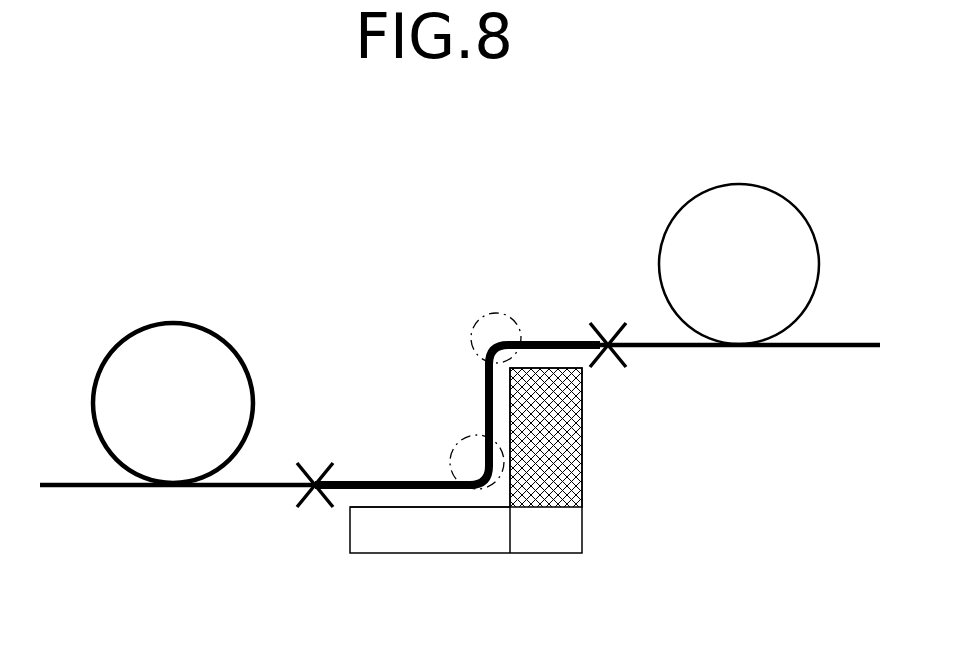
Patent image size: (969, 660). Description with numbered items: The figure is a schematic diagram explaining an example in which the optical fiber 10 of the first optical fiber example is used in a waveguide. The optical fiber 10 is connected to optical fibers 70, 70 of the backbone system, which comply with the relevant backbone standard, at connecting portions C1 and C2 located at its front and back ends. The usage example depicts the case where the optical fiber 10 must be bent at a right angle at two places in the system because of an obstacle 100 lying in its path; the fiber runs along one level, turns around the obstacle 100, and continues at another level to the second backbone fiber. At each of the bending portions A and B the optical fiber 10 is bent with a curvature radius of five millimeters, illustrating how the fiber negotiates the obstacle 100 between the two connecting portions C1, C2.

The optical fiber of the backbone system 70 is at (123, 333).
The optical fiber 10 is at (384, 479).
The obstacle 100 is at (448, 554).
The connecting portion C1 is at (315, 508).
The connecting portion C2 is at (606, 322).
The bending portion A is at (465, 449).
The bending portion B is at (484, 322).